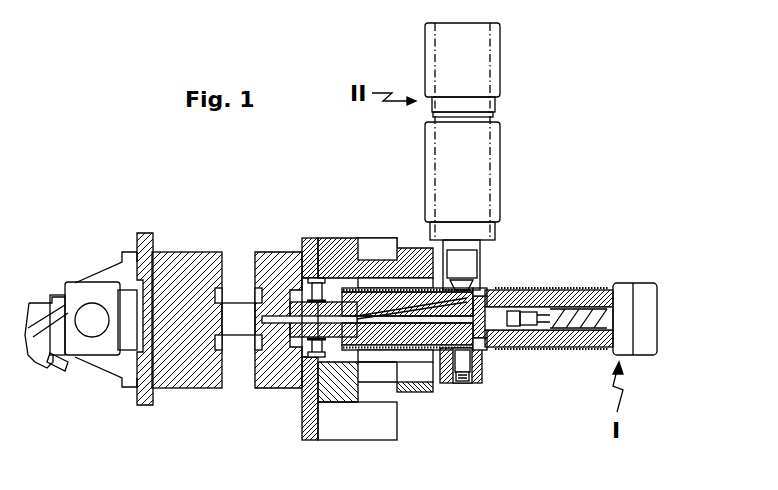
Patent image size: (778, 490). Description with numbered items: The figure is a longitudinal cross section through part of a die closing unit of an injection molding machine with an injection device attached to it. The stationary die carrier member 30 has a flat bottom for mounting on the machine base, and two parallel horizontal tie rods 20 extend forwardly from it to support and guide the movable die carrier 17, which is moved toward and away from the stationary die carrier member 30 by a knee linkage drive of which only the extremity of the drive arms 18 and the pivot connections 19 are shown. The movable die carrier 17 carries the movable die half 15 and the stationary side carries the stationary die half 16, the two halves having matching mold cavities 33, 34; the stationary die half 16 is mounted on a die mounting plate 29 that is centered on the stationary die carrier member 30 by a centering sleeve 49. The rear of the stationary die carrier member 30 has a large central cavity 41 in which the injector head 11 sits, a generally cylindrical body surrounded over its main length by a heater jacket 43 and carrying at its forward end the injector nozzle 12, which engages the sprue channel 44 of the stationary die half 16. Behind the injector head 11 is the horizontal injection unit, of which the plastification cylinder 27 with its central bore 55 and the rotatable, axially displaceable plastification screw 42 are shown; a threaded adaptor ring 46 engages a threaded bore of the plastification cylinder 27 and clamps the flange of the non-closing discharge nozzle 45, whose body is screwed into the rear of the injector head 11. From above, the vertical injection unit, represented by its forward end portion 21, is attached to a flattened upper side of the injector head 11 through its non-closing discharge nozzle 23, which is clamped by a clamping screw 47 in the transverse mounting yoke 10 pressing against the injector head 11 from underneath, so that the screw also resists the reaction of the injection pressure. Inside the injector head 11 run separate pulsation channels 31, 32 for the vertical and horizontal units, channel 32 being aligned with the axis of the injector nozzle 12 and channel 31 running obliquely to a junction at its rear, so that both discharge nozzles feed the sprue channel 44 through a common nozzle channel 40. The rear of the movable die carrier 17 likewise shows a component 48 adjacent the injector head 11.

The mounting yoke 10 is at (483, 290).
The injector head 11 is at (419, 340).
The injector nozzle 12 is at (297, 300).
The movable die half 15 is at (187, 373).
The stationary die half 16 is at (272, 380).
The movable die carrier 17 is at (124, 272).
The drive arms 18 is at (58, 368).
The pivot connections 19 is at (90, 310).
The tie rods 20 is at (40, 310).
The tool holder 21 is at (478, 143).
The discharge nozzle 23 is at (470, 268).
The plastification cylinder 27 is at (637, 307).
The die mounting plate 29 is at (313, 440).
The stationary die carrier member 30 is at (358, 420).
The pulsation channel 31 is at (384, 346).
The pulsation channel 32 is at (484, 344).
The mold cavity 33 is at (226, 292).
The mold cavity 34 is at (258, 323).
The common nozzle channel 40 is at (313, 278).
The central cavity 41 is at (370, 270).
The plastification screw 42 is at (595, 318).
The heater jacket 43 is at (393, 292).
The sprue channel 44 is at (256, 347).
The discharge nozzle 45 is at (507, 284).
The threaded adaptor ring 46 is at (482, 300).
The clamping screw 47 is at (462, 374).
The bolt 48 is at (317, 337).
The centering sleeve 49 is at (308, 372).
The central bore 55 is at (514, 320).